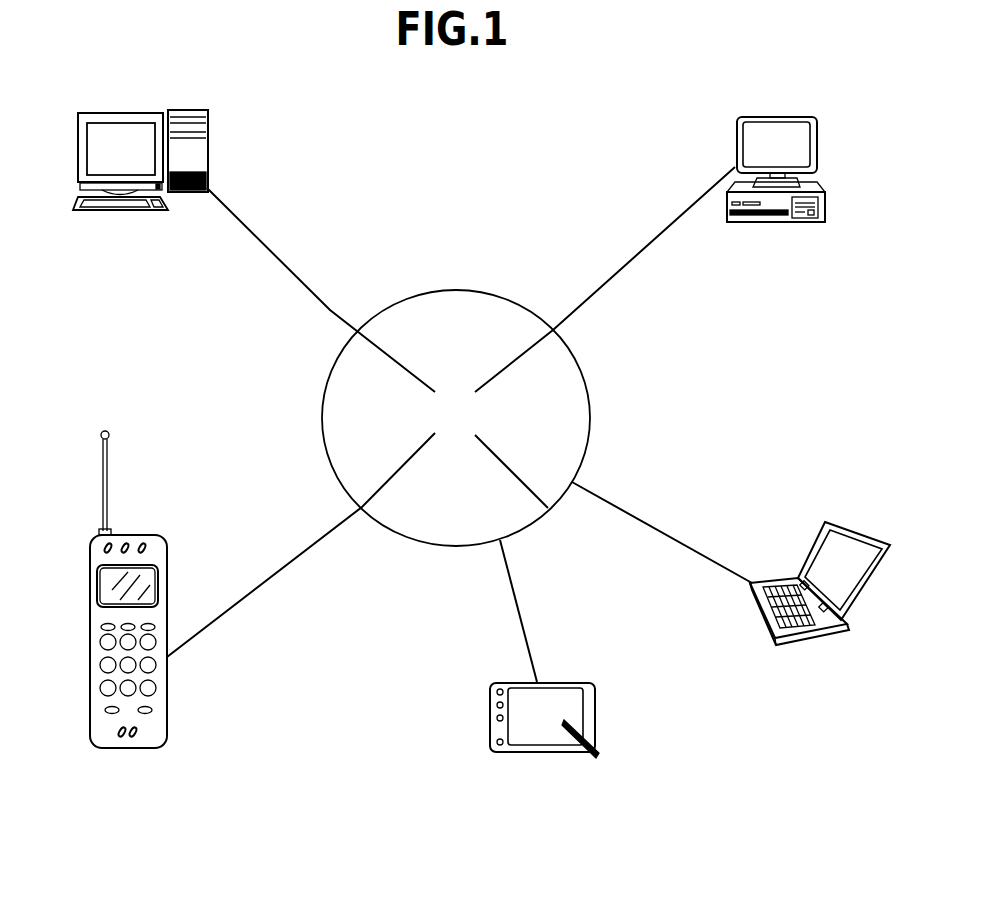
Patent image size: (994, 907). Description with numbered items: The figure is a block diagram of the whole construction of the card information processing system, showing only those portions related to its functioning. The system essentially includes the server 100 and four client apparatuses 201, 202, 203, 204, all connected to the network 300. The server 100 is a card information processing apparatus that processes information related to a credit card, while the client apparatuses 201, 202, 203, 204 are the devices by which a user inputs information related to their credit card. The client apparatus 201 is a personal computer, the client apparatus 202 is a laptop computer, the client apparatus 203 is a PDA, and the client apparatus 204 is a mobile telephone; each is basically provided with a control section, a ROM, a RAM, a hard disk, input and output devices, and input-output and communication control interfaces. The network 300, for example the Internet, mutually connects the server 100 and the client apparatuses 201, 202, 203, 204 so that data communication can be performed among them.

The server 100 is at (125, 113).
The client apparatus 201 is at (776, 117).
The client apparatus 202 is at (865, 541).
The client apparatus 203 is at (577, 683).
The client apparatus 204 is at (150, 537).
The network 300 is at (455, 292).